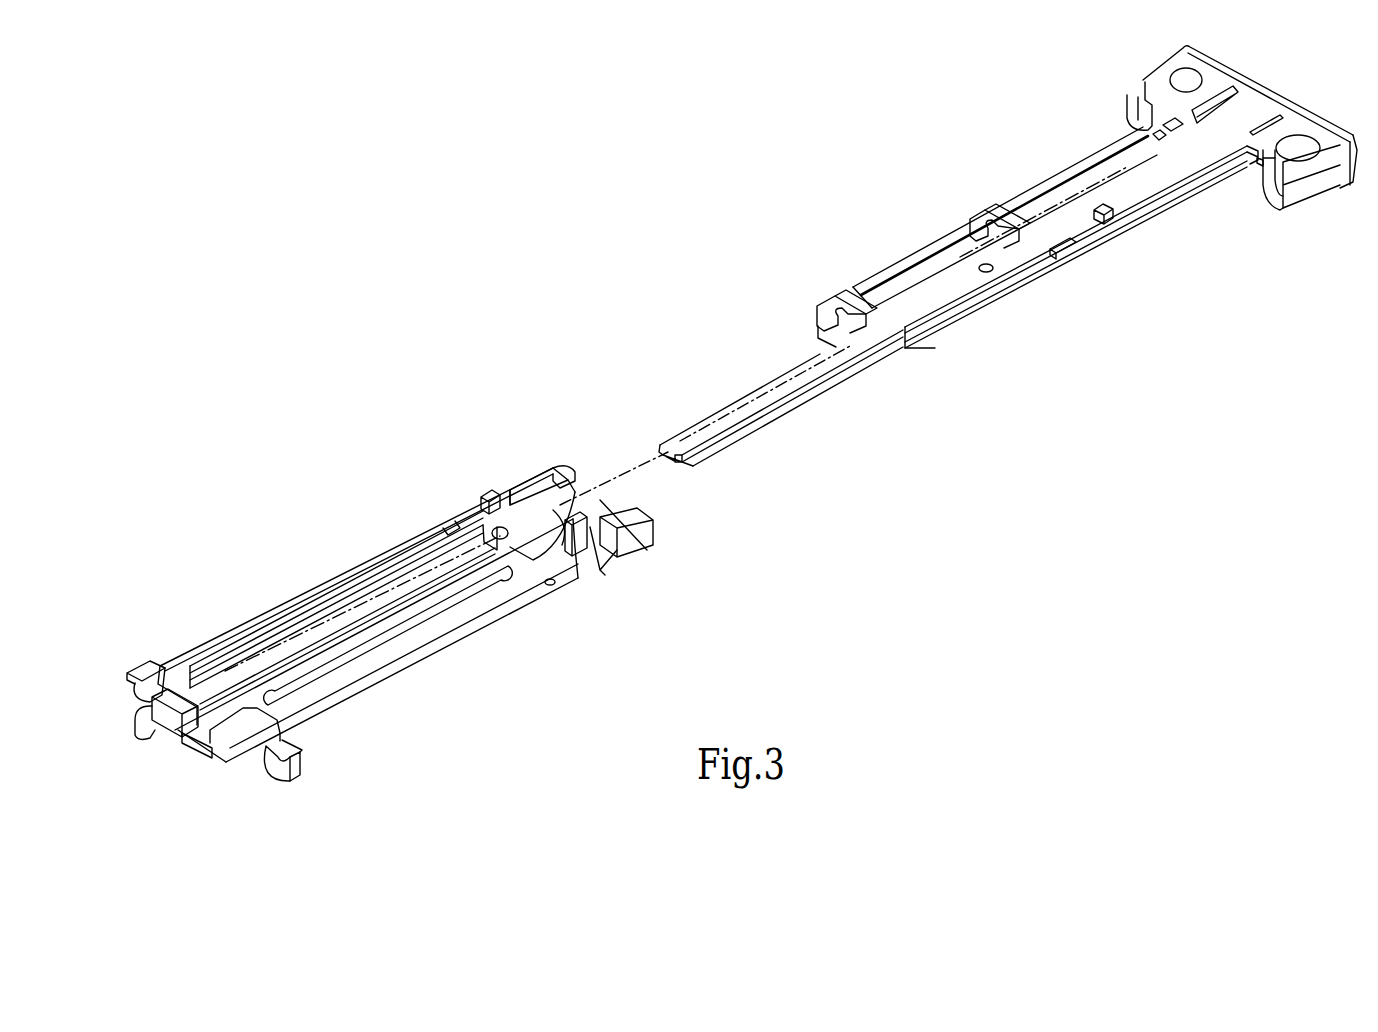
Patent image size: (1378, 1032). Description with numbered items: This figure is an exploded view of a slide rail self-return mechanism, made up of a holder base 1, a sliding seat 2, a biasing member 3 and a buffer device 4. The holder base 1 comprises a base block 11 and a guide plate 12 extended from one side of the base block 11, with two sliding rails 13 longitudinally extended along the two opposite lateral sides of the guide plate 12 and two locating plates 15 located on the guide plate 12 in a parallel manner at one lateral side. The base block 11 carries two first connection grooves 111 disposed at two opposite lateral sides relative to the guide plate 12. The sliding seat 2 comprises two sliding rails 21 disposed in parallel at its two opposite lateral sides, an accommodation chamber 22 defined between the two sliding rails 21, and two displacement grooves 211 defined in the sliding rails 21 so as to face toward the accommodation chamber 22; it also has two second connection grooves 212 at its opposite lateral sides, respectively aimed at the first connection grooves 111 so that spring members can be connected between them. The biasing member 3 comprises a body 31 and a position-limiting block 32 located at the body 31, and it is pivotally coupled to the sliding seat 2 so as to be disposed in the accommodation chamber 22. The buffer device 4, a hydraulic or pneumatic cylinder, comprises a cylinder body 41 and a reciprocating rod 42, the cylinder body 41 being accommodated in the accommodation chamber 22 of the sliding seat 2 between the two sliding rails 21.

The holder base 1 is at (958, 273).
The base block 11 is at (1212, 126).
The first connection grooves 111 is at (1140, 100).
The guide plate 12 is at (1134, 175).
The sliding rails 13 is at (1028, 188).
The locating plates 15 is at (1140, 103).
The sliding seat 2 is at (371, 600).
The sliding rails 21 is at (370, 686).
The displacement grooves 211 is at (440, 528).
The second connection grooves 212 is at (150, 665).
The accommodation chamber 22 is at (556, 492).
The biasing member 3 is at (577, 517).
The body 31 is at (550, 547).
The position-limiting block 32 is at (648, 556).
The buffer device 4 is at (349, 585).
The cylinder body 41 is at (357, 603).
The reciprocating rod 42 is at (490, 500).